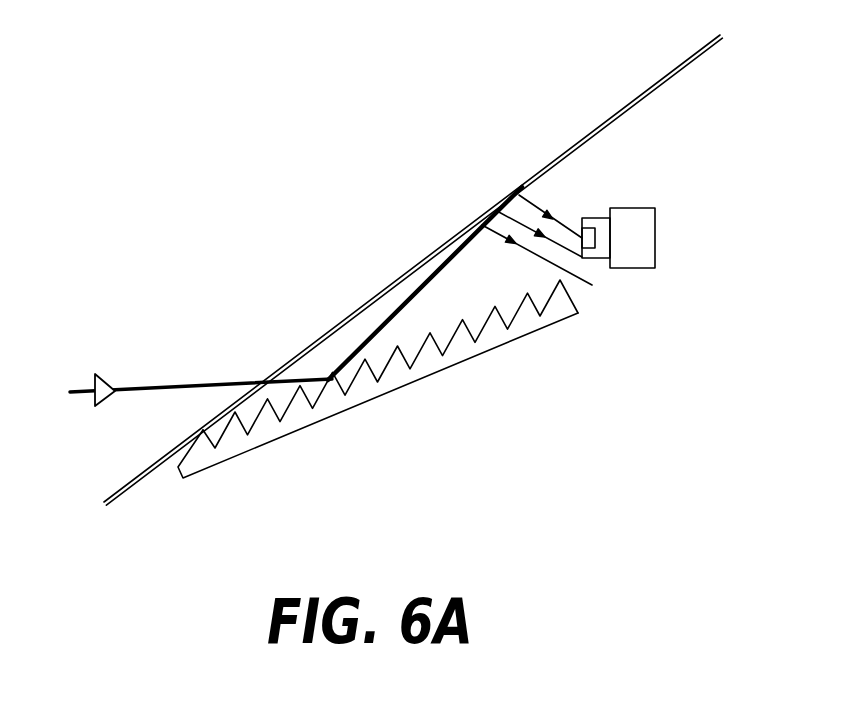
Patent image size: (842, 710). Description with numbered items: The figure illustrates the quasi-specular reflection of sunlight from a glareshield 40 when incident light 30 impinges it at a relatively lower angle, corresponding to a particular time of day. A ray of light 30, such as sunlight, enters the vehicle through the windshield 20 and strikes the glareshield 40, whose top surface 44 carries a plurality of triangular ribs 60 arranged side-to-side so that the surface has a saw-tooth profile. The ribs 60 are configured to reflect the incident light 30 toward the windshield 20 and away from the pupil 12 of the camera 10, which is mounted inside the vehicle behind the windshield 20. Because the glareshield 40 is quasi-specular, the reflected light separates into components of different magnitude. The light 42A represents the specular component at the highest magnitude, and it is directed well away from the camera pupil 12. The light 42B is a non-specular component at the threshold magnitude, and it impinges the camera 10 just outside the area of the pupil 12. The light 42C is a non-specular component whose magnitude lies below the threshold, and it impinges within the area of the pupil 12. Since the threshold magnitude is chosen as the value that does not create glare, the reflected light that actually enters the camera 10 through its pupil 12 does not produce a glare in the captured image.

The camera 10 is at (694, 238).
The pupil 12 is at (591, 228).
The windshield 20 is at (122, 479).
The incident light 30 is at (136, 388).
The glareshield 40 is at (233, 459).
The specular component of reflection 42A is at (535, 231).
The non-specular component of reflection at threshold magnitude 42B is at (525, 201).
The non-specular component of reflection below threshold magnitude 42C is at (547, 215).
The top surface 44 is at (425, 318).
The triangular ribs 60 is at (432, 353).